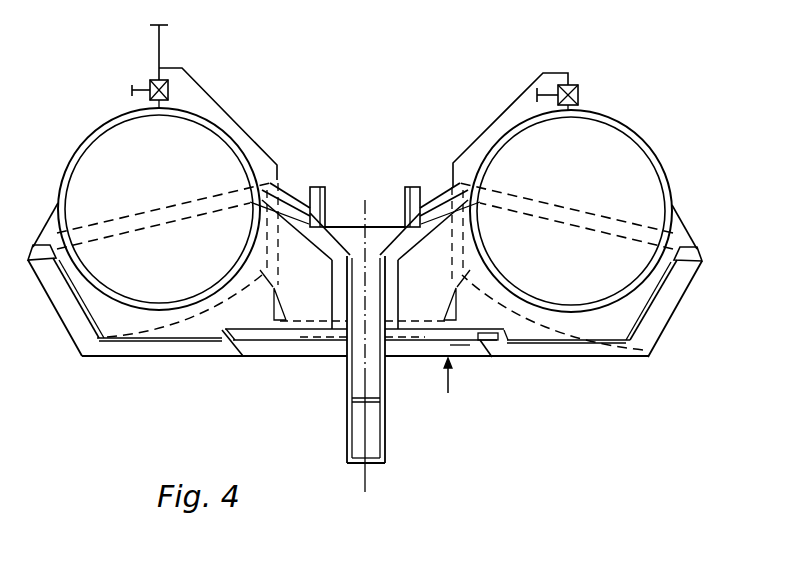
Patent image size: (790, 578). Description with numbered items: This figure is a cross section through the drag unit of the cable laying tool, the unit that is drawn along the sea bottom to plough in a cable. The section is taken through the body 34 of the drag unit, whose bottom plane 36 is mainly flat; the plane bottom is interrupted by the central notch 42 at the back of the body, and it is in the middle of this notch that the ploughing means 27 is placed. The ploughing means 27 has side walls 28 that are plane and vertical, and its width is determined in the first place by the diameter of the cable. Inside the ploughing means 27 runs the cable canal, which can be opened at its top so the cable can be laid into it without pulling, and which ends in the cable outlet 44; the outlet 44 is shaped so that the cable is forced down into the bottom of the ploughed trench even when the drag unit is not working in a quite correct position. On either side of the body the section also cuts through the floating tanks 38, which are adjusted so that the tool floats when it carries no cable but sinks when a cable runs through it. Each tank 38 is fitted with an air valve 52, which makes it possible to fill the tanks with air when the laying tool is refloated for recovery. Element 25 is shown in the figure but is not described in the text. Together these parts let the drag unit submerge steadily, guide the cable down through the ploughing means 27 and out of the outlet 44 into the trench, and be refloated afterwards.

The support member 25 is at (470, 345).
The ploughing means 27 is at (367, 385).
The side walls 28 is at (345, 388).
The body 34 is at (67, 308).
The bottom plane 36 is at (150, 357).
The floating tanks 38 is at (127, 168).
The central notch 42 is at (267, 343).
The cable outlet 44 is at (373, 448).
The air valve 52 is at (170, 82).